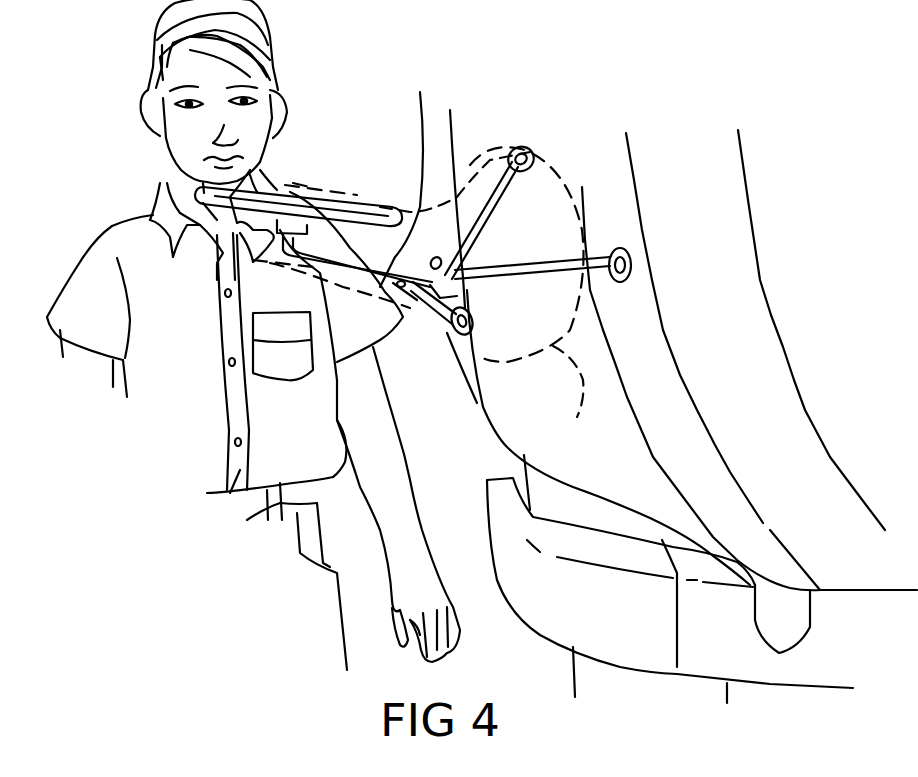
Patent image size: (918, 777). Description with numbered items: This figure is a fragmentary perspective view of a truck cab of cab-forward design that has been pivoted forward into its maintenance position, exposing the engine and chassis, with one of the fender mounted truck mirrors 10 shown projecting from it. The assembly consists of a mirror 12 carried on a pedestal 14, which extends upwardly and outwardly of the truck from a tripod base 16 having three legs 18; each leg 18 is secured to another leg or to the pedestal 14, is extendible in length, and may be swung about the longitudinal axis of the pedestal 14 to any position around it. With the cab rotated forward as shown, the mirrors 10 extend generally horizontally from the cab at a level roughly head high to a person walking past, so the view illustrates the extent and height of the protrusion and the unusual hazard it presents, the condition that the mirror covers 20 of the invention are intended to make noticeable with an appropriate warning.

The truck mirrors 10 is at (288, 172).
The mirror 12 is at (350, 212).
The pedestal 14 is at (432, 258).
The tripod base 16 is at (512, 232).
The legs 18 is at (492, 160).
The mirror covers 20 is at (554, 402).